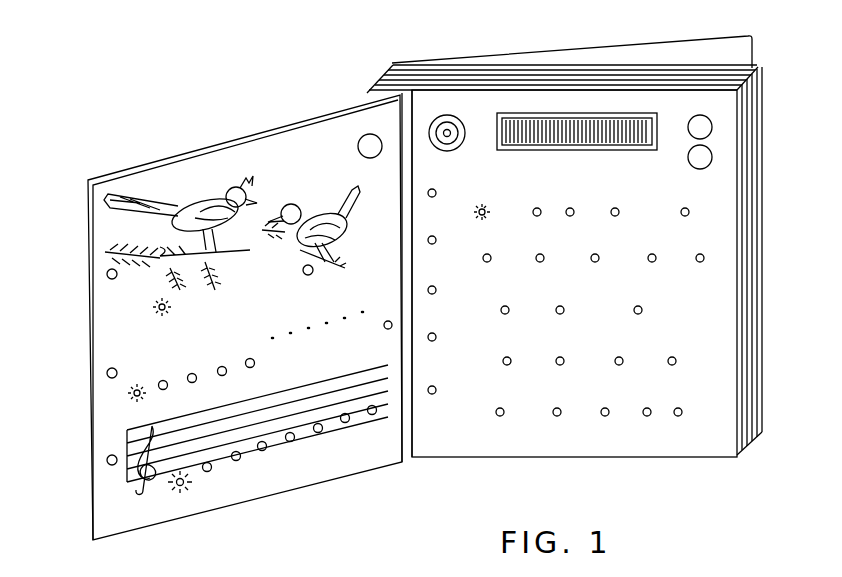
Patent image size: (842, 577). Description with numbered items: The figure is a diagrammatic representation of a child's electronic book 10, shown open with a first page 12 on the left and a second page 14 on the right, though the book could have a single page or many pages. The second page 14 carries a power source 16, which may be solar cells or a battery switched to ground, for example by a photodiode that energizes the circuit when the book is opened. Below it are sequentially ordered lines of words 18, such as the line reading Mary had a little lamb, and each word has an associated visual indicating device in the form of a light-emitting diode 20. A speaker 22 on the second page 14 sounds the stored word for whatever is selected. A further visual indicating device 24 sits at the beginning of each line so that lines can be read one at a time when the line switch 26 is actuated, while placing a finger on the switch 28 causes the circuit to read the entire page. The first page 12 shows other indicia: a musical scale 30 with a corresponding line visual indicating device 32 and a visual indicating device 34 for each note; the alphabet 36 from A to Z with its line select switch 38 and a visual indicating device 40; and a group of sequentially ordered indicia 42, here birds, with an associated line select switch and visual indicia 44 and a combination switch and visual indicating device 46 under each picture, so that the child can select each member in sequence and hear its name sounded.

The child's electronic book 10 is at (200, 84).
The first page 12 is at (281, 126).
The second page 14 is at (520, 89).
The power source 16 is at (578, 132).
The lines of words 18 is at (722, 190).
The light-emitting diode 20 is at (689, 212).
The speaker 22 is at (447, 114).
The visual indicating device 24 is at (432, 188).
The line switch 26 is at (713, 157).
The switch 28 is at (700, 114).
The musical scale 30 is at (108, 493).
The line visual indicating device 32 is at (107, 463).
The visual indicating device 34 is at (181, 488).
The alphabet 36 is at (105, 351).
The line select switch 38 is at (107, 376).
The visual indicating device 40 is at (128, 400).
The groups of sequentially ordered indicia 42 is at (104, 227).
The line select switch and visual indicia 44 is at (107, 275).
The combination switch and visual indicating device 46 is at (148, 322).